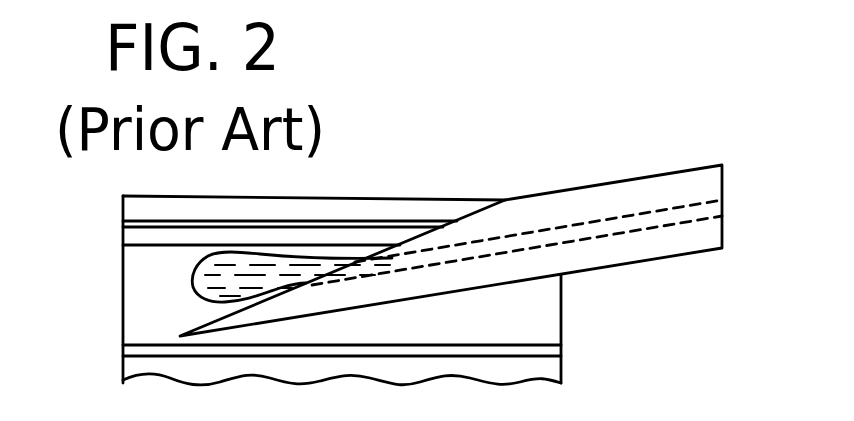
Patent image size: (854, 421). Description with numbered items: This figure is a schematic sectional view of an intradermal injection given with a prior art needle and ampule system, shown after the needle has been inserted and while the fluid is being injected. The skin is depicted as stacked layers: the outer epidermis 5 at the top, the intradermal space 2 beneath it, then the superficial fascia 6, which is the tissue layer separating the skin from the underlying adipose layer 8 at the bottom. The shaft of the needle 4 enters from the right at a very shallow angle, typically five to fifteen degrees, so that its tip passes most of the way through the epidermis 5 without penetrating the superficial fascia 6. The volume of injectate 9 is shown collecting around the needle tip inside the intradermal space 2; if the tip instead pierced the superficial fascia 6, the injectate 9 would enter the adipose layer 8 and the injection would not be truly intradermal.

The intradermal space 2 is at (561, 312).
The needle 4 is at (693, 252).
The epidermis 5 is at (123, 222).
The superficial fascia 6 is at (561, 355).
The adipose layer 8 is at (561, 375).
The injectate 9 is at (192, 285).